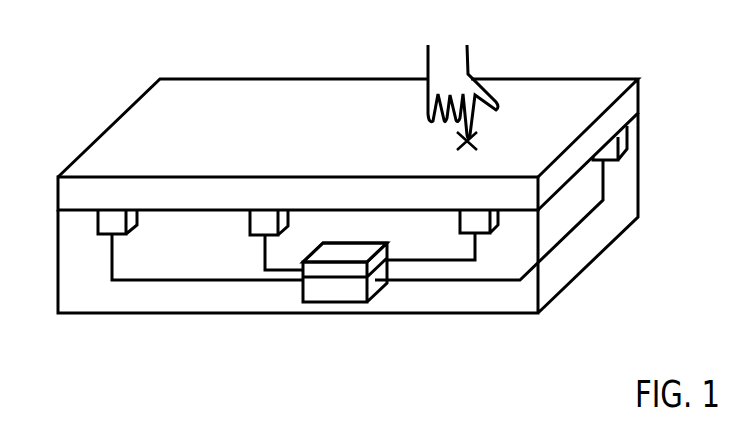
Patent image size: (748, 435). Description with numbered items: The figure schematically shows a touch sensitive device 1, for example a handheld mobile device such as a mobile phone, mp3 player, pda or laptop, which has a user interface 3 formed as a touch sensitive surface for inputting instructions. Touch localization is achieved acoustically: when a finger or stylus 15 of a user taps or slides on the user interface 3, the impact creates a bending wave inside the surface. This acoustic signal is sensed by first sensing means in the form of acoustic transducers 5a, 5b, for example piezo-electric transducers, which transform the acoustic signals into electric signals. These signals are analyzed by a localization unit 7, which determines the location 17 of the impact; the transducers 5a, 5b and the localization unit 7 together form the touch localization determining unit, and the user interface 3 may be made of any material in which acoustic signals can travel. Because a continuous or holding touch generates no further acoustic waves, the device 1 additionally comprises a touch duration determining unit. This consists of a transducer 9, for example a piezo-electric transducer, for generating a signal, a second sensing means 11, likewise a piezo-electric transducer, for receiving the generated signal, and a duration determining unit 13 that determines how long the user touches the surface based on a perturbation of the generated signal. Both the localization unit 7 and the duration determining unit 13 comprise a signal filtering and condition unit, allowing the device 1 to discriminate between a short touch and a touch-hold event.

The touch sensitive device 1 is at (266, 323).
The user interface 3 is at (264, 79).
The acoustic transducer 5a is at (107, 223).
The acoustic transducer 5b is at (625, 146).
The localization unit 7 is at (355, 297).
The transducer 9 is at (250, 230).
The second sensing means 11 is at (497, 233).
The duration determining unit 13 is at (326, 270).
The finger or stylus 15 is at (427, 59).
The location 17 is at (472, 139).